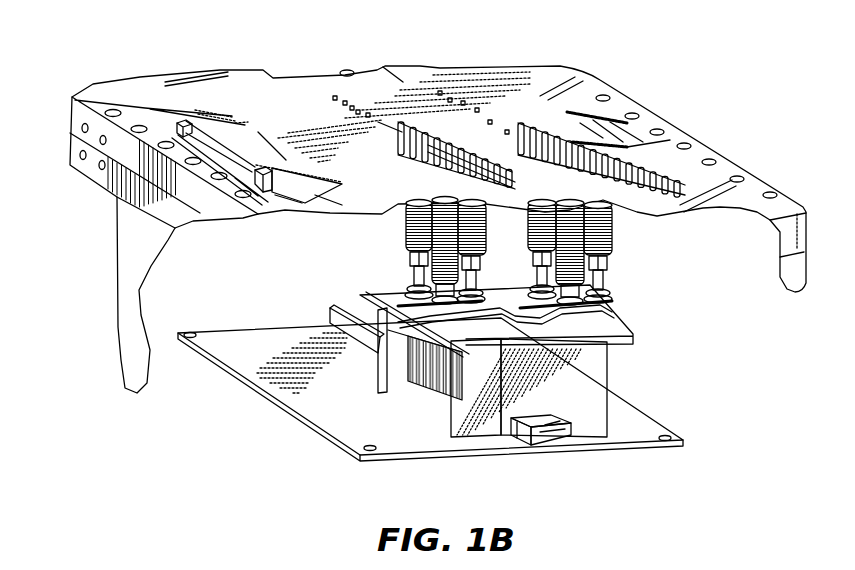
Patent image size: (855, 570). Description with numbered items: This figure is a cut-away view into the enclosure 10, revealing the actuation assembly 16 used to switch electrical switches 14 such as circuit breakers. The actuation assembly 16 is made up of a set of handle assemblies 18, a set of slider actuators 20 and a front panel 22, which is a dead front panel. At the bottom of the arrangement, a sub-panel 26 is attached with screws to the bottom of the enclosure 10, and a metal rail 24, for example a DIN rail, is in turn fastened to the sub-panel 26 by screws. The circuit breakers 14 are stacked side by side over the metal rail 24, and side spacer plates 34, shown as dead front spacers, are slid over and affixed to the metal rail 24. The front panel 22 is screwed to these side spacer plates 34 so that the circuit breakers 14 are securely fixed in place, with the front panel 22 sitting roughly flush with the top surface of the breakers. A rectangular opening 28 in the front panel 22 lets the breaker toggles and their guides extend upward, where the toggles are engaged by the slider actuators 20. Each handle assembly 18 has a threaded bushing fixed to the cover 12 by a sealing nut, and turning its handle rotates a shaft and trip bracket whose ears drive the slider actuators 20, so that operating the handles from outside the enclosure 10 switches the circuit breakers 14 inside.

The enclosure 10 is at (92, 262).
The cover 12 is at (68, 92).
The electrical switches 14 is at (416, 404).
The actuation assembly 16 is at (292, 246).
The handle assemblies 18 is at (630, 266).
The slider actuators 20 is at (388, 290).
The front panel 22 is at (648, 340).
The metal rail 24 is at (566, 440).
The sub-panel 26 is at (371, 465).
The rectangular opening 28 is at (501, 338).
The side spacer plates 34 is at (366, 360).